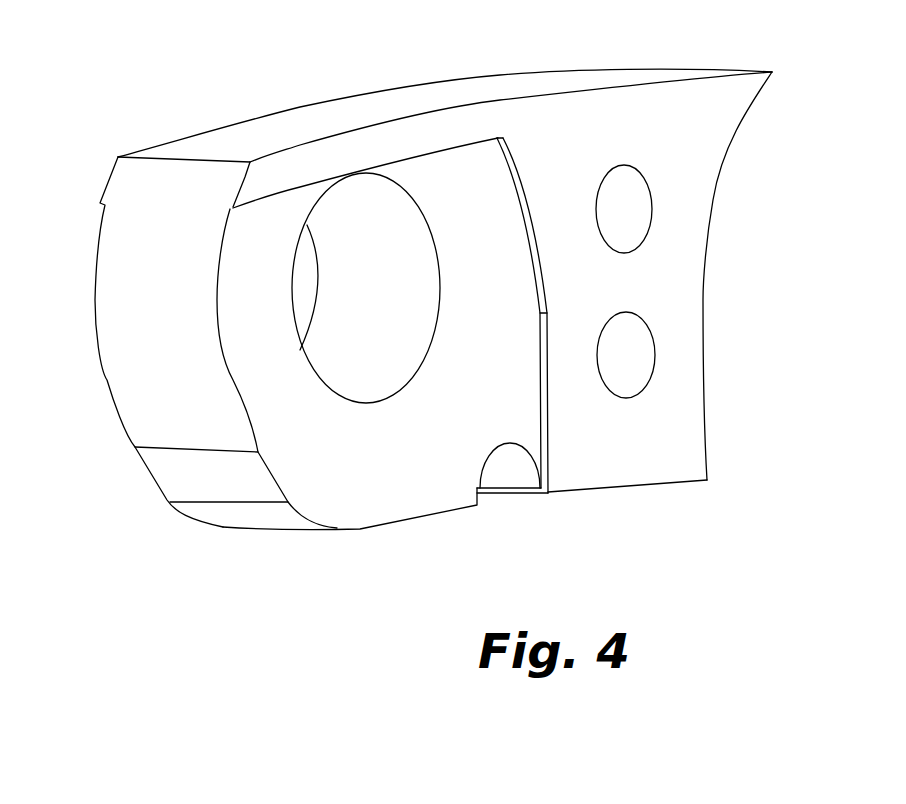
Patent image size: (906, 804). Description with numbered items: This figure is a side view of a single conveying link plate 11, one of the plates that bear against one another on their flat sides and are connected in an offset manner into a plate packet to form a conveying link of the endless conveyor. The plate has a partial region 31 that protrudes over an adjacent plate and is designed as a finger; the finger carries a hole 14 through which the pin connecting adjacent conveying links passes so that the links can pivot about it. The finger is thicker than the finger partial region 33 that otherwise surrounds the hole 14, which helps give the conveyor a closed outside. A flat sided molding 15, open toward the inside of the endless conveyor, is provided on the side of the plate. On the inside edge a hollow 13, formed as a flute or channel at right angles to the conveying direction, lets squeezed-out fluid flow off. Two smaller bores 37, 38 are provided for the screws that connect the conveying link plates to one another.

The conveying link plate 11 is at (320, 88).
The hollow 13 is at (503, 490).
The hole 14 is at (360, 232).
The flat sided molding 15 is at (98, 216).
The partial region 31 is at (399, 510).
The finger partial region 33 is at (260, 337).
The bore 37 is at (650, 223).
The bore 38 is at (653, 373).